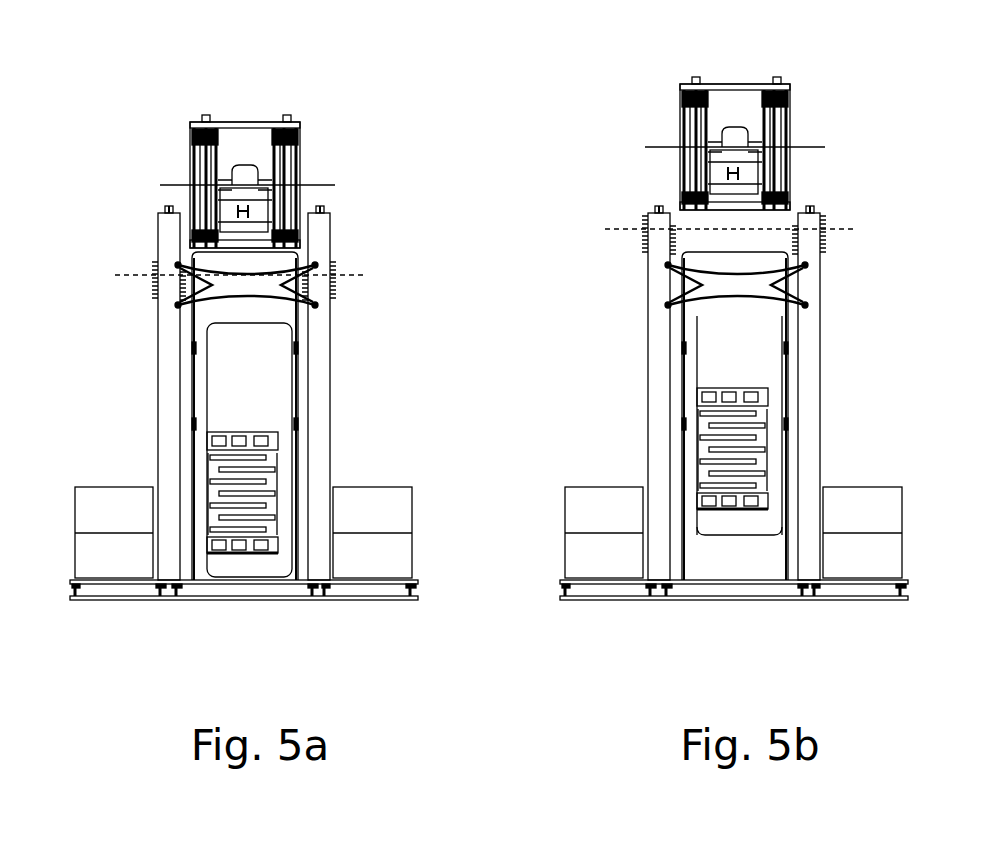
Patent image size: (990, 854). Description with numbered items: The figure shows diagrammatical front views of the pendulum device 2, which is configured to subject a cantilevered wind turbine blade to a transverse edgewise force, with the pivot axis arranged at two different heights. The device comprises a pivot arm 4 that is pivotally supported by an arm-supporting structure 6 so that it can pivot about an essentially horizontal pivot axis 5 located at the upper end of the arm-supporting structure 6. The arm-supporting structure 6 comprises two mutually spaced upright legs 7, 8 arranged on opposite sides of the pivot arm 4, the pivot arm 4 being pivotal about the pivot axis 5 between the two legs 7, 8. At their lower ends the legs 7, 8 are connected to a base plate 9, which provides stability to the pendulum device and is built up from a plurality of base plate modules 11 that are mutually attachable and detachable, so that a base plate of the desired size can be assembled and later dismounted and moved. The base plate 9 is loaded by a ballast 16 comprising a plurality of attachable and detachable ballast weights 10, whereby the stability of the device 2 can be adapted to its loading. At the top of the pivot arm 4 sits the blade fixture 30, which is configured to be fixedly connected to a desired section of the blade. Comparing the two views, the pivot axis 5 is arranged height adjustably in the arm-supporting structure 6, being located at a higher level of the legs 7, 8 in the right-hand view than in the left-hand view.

In FIG. 5A, the pendulum device 2 is at (318, 146).
In FIG. 5B, the pendulum device 2 is at (738, 359).
In FIG. 5A, the pivot arm 4 is at (318, 425).
In FIG. 5B, the pivot arm 4 is at (783, 416).
In FIG. 5A, the pivot axis 5 is at (360, 274).
In FIG. 5B, the pivot axis 5 is at (763, 183).
In FIG. 5A, the arm-supporting structure 6 is at (333, 214).
In FIG. 5B, the arm-supporting structure 6 is at (760, 173).
In FIG. 5A, the upright leg 7 is at (318, 352).
In FIG. 5B, the upright leg 7 is at (844, 396).
In FIG. 5A, the upright leg 8 is at (160, 348).
In FIG. 5B, the upright leg 8 is at (616, 396).
In FIG. 5A, the base plate 9 is at (388, 600).
In FIG. 5B, the base plate 9 is at (734, 646).
In FIG. 5A, the ballast weight 10 is at (368, 498).
In FIG. 5B, the ballast weight 10 is at (871, 499).
In FIG. 5A, the base plate module 11 is at (345, 598).
In FIG. 5B, the base plate module 11 is at (734, 638).
In FIG. 5A, the ballast 16 is at (122, 487).
In FIG. 5B, the ballast 16 is at (604, 484).
In FIG. 5A, the blade fixture 30 is at (191, 157).
In FIG. 5B, the blade fixture 30 is at (696, 142).